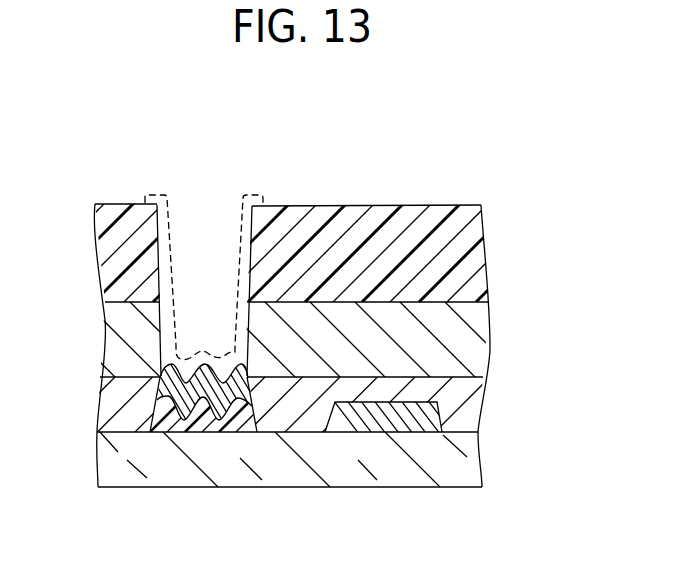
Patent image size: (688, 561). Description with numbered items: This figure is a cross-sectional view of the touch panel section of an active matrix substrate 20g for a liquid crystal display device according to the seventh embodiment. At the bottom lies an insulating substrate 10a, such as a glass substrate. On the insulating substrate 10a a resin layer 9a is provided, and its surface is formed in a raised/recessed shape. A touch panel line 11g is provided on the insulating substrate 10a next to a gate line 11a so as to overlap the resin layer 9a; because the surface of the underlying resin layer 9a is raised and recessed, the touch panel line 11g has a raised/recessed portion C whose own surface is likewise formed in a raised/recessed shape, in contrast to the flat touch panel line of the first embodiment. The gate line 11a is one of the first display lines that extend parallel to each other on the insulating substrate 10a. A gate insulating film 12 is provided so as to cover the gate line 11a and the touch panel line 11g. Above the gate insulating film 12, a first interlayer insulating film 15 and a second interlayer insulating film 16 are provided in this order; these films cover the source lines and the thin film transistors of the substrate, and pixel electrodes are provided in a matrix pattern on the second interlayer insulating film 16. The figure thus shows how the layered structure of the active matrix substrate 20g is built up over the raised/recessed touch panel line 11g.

The active matrix substrate 20g is at (127, 152).
The second interlayer insulating film 16 is at (470, 262).
The first interlayer insulating film 15 is at (478, 348).
The gate insulating film 12 is at (473, 407).
The insulating substrate 10a is at (475, 460).
The touch panel line 11g is at (170, 383).
The resin layer 9a is at (205, 422).
The gate line 11a is at (383, 423).
The raised/recessed portion C is at (208, 338).